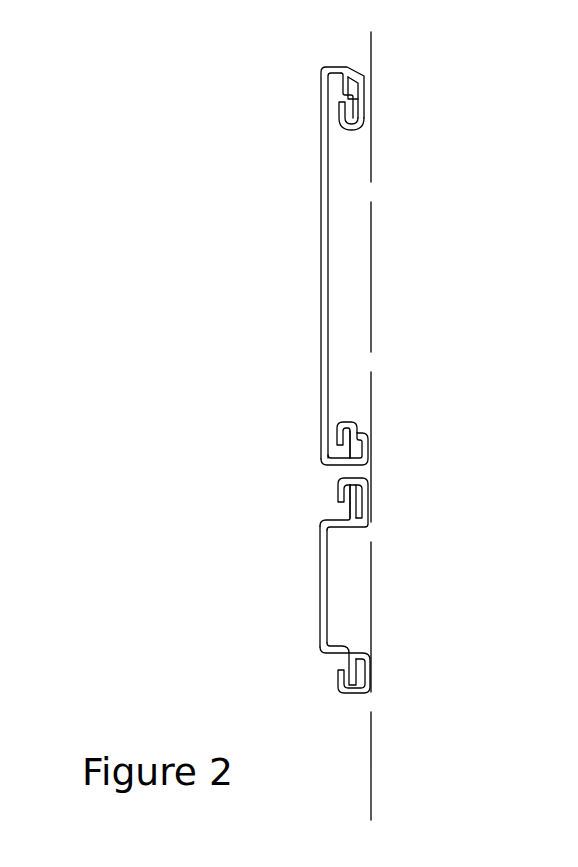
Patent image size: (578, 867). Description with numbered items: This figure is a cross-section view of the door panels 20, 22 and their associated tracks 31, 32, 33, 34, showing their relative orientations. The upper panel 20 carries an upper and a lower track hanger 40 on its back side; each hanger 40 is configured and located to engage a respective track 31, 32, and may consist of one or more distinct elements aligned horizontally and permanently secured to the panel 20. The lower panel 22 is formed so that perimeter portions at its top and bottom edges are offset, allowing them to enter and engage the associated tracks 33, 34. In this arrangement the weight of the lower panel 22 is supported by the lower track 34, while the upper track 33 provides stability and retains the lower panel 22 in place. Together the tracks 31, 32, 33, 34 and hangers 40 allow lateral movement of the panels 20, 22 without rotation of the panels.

The upper panel 20 is at (344, 266).
The lower panel 22 is at (375, 587).
The track 31 is at (366, 115).
The track 32 is at (366, 421).
The upper track 33 is at (371, 498).
The lower track 34 is at (370, 676).
The track hanger 40 is at (352, 82).